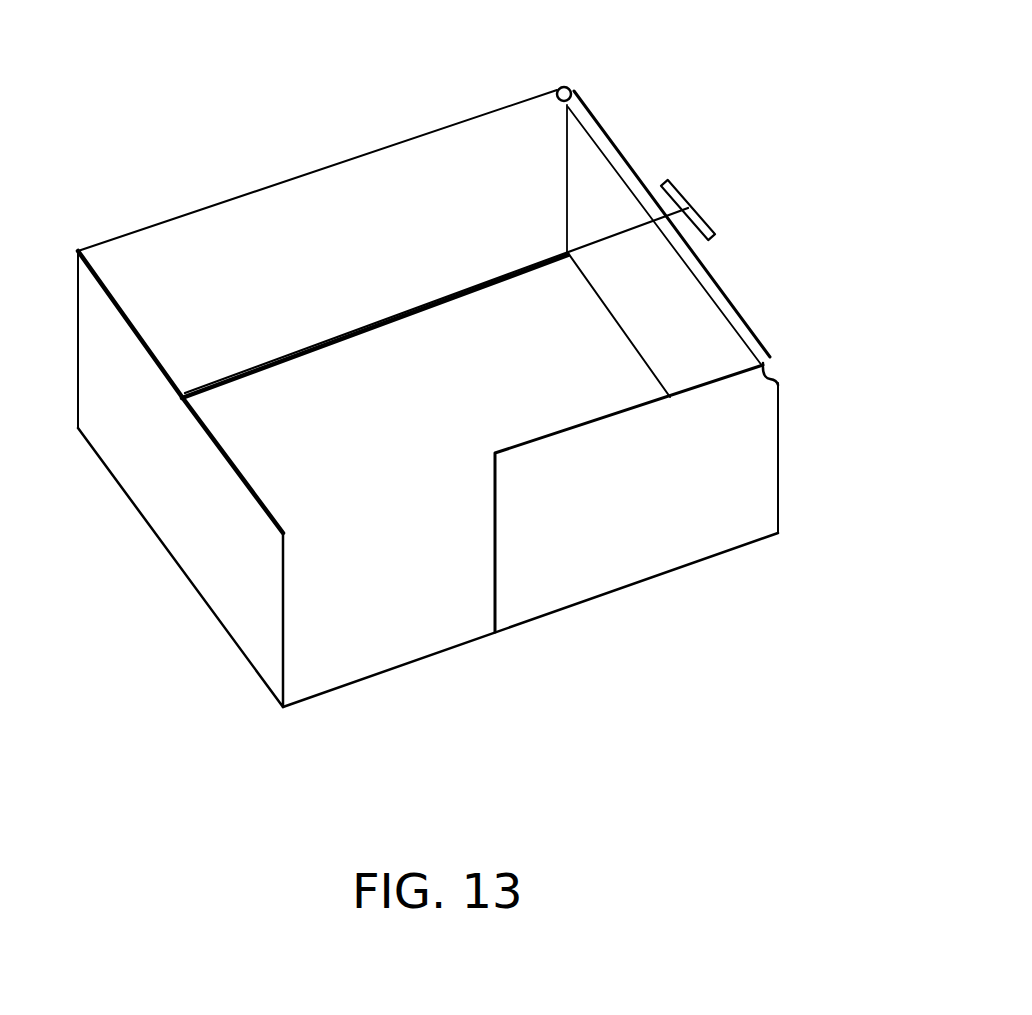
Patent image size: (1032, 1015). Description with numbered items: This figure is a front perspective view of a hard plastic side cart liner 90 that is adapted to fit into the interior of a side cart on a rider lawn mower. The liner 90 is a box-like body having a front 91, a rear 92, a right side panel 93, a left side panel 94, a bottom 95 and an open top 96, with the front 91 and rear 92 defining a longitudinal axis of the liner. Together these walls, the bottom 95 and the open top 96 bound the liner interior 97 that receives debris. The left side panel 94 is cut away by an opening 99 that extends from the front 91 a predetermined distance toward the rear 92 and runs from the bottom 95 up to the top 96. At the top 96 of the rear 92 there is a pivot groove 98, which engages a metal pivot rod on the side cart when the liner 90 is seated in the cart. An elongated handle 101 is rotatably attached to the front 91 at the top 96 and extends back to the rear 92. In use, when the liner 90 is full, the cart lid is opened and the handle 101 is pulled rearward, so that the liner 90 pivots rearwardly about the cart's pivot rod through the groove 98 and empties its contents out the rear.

The side cart liner 90 is at (480, 115).
The liner front 91 is at (187, 530).
The liner rear 92 is at (692, 325).
The right side panel 93 is at (213, 247).
The left side panel 94 is at (658, 533).
The liner bottom 95 is at (398, 466).
The open top 96 is at (367, 157).
The liner interior 97 is at (547, 370).
The pivot groove 98 is at (780, 373).
The opening 99 is at (373, 643).
The elongated handle 101 is at (690, 203).